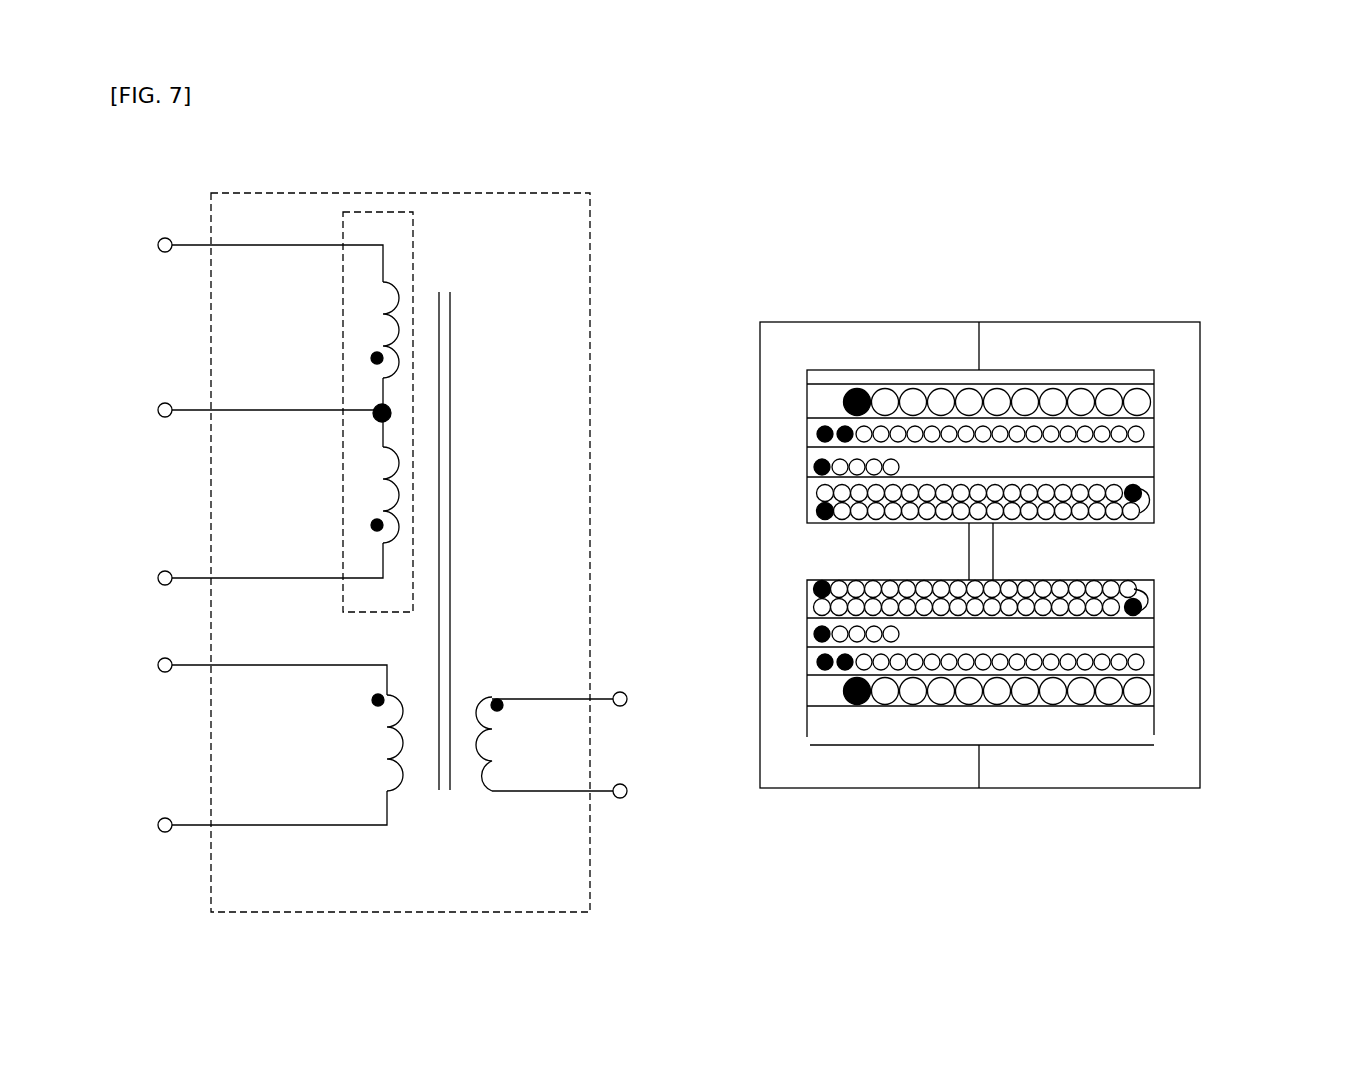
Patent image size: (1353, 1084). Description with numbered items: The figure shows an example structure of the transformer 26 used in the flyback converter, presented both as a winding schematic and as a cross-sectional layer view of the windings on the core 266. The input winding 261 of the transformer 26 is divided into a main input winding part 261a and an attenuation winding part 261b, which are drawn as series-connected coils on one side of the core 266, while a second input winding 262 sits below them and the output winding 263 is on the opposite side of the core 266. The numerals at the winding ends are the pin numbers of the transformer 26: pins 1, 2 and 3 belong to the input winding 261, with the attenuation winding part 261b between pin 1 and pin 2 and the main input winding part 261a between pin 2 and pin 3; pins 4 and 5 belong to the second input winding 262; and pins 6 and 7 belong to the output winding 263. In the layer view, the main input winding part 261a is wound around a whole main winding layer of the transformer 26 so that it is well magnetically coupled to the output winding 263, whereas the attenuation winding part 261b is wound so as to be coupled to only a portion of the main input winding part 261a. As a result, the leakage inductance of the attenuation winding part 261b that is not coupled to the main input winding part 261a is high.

The transformer 26 is at (210, 193).
The input winding 261 is at (424, 240).
The main input winding part 261a is at (370, 498).
The attenuation winding part 261b is at (370, 336).
The second input winding 262 is at (385, 725).
The output winding 263 is at (495, 735).
The core 266 is at (442, 802).
The pin 1 is at (888, 470).
The pin 2 is at (641, 445).
The pin 3 is at (820, 515).
The pin 4 is at (820, 434).
The pin 5 is at (1230, 434).
The pin 6 is at (1230, 402).
The pin 7 is at (842, 402).